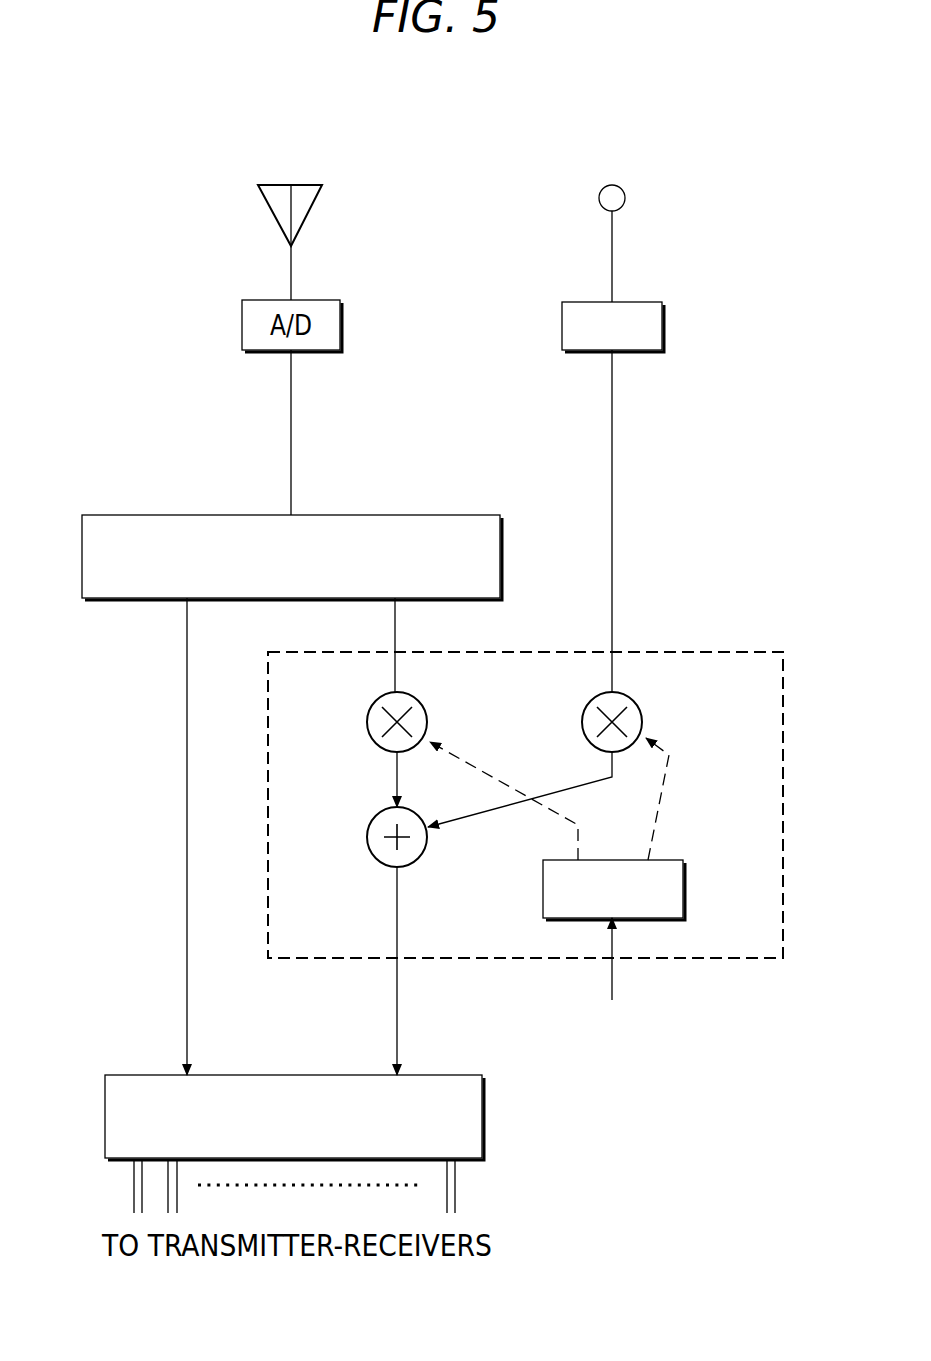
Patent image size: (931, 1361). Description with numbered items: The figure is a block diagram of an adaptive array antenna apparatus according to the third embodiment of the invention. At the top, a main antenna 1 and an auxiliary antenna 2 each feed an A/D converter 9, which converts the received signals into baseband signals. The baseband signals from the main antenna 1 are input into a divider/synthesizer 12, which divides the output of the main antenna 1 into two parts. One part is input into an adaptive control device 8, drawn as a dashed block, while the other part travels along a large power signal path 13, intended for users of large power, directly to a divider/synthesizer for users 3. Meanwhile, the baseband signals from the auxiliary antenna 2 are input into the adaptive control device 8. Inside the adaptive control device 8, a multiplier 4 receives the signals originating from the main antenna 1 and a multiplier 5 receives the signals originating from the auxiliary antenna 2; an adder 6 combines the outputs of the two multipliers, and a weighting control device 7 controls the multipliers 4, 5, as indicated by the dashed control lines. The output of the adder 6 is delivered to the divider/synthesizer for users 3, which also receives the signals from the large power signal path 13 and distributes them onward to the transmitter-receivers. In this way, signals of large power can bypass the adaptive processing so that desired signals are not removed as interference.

The main antenna 1 is at (307, 183).
The auxiliary antenna 2 is at (620, 187).
The divider/synthesizer for users 3 is at (104, 1116).
The multiplier 4 is at (366, 722).
The multiplier 5 is at (643, 722).
The adder 6 is at (366, 837).
The weighting control device 7 is at (687, 888).
The adaptive control device 8 is at (783, 800).
The A/D converter 9 is at (667, 322).
The divider/synthesizer 12 is at (80, 558).
The large power signal path 13 is at (187, 835).